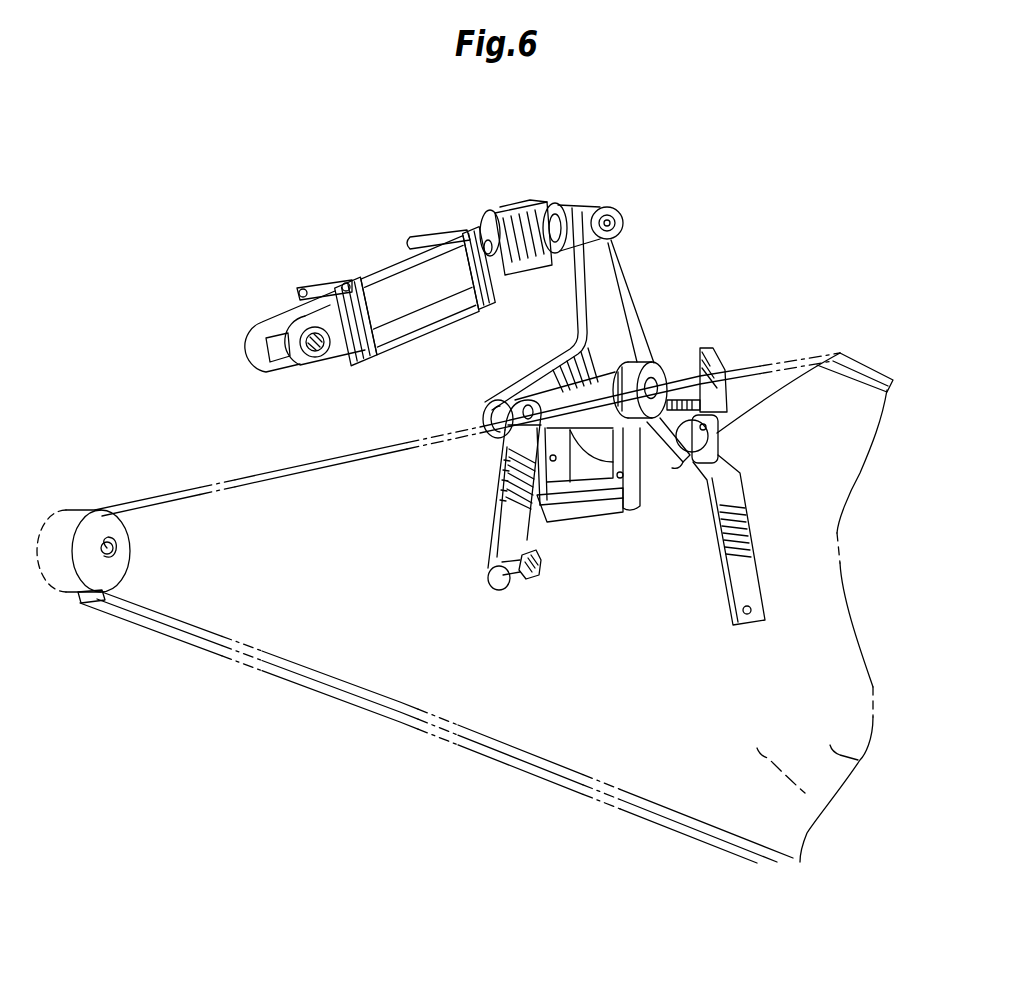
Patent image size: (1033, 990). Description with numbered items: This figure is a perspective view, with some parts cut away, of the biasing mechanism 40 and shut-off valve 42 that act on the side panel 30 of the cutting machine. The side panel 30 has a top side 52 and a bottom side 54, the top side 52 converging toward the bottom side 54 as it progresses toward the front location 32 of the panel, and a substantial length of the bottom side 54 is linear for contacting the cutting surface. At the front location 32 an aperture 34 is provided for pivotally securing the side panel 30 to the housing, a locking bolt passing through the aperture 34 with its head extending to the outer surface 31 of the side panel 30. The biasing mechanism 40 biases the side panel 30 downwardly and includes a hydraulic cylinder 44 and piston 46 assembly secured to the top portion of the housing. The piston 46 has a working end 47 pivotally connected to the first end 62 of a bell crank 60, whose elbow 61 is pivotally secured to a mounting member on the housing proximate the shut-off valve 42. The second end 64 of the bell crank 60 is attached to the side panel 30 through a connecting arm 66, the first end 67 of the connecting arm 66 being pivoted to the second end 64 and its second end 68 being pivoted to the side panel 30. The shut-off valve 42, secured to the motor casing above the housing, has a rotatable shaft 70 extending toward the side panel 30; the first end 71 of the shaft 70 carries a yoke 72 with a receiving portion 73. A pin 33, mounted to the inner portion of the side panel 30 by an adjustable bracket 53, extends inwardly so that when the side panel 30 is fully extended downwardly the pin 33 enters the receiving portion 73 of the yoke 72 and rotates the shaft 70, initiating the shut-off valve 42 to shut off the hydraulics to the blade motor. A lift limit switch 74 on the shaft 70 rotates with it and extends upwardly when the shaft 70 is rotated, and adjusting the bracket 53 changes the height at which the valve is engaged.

The side panel 30 is at (868, 760).
The outer surface 31 is at (833, 795).
The front location 32 is at (152, 582).
The pin 33 is at (710, 432).
The aperture 34 is at (138, 545).
The biasing mechanism 40 is at (666, 190).
The shut-off valve 42 is at (590, 507).
The cylinder 44 is at (400, 295).
The piston 46 is at (488, 247).
The working end 47 is at (552, 226).
The top side 52 is at (307, 467).
The bracket 53 is at (717, 556).
The bottom side 54 is at (190, 643).
The bell crank 60 is at (600, 285).
The elbow 61 is at (641, 380).
The first end 62 is at (577, 220).
The second end 64 is at (490, 403).
The connecting arm 66 is at (517, 497).
The first end 67 is at (500, 443).
The second end 68 is at (490, 585).
The rotatable shaft 70 is at (630, 432).
The first end 71 is at (630, 428).
The yoke 72 is at (680, 418).
The receiving portion 73 is at (840, 353).
The lift limit switch 74 is at (713, 360).